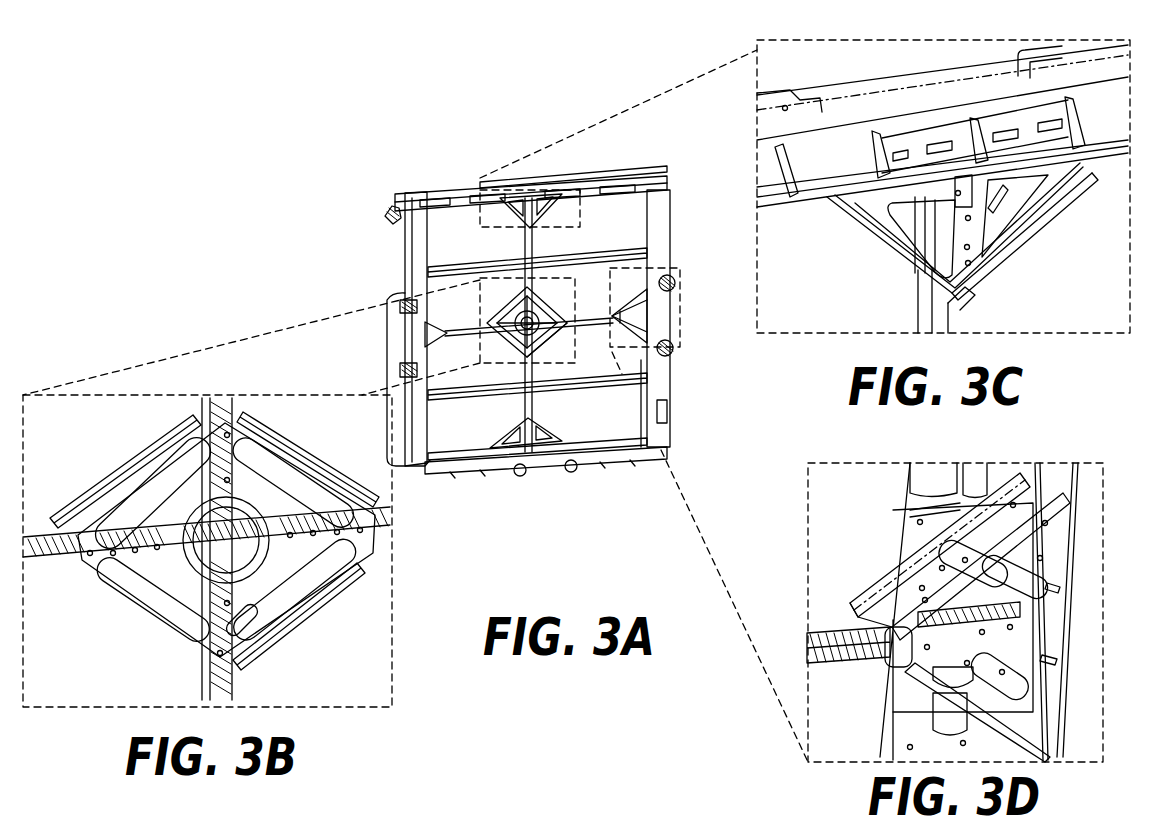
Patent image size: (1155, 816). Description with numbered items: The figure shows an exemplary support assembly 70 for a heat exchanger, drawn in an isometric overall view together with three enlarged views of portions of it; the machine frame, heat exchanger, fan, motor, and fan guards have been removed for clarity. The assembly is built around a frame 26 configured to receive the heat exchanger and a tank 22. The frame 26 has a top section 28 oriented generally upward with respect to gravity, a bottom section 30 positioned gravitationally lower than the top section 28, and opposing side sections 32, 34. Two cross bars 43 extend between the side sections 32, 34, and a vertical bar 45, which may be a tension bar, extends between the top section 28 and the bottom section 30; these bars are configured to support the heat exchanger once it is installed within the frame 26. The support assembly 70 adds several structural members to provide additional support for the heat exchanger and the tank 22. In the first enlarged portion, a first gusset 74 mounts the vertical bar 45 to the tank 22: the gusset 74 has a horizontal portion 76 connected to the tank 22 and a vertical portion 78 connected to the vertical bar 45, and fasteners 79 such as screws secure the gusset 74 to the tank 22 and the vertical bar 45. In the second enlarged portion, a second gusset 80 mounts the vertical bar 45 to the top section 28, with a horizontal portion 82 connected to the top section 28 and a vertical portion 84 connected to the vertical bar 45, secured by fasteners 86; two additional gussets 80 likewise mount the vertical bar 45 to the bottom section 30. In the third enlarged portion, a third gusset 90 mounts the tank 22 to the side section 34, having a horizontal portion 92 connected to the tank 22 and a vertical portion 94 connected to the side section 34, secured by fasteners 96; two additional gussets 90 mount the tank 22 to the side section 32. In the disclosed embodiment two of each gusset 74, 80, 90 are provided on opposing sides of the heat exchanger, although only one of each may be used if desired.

In FIG. 3A, the support assembly 70 is at (482, 95).
In FIG. 3A, the tank 22 is at (446, 333).
In FIG. 3B, the tank 22 is at (42, 558).
In FIG. 3D, the tank 22 is at (828, 657).
In FIG. 3A, the frame 26 is at (393, 212).
In FIG. 3A, the top section 28 is at (627, 178).
In FIG. 3C, the top section 28 is at (843, 147).
In FIG. 3A, the bottom section 30 is at (478, 474).
In FIG. 3A, the side section 32 is at (404, 254).
In FIG. 3A, the side section 34 is at (670, 237).
In FIG. 3D, the side section 34 is at (927, 475).
In FIG. 3A, the cross bar 43 is at (418, 197).
In FIG. 3A, the vertical bar 45 is at (524, 243).
In FIG. 3B, the vertical bar 45 is at (233, 688).
In FIG. 3C, the vertical bar 45 is at (918, 310).
In FIG. 3A, the first gusset 74 is at (560, 352).
In FIG. 3B, the first gusset 74 is at (98, 497).
In FIG. 3B, the horizontal portion 76 is at (349, 534).
In FIG. 3B, the vertical portion 78 is at (232, 610).
In FIG. 3B, the fasteners 79 is at (251, 449).
In FIG. 3A, the second gusset 80 is at (565, 203).
In FIG. 3C, the second gusset 80 is at (852, 223).
In FIG. 3C, the horizontal portion 82 is at (1062, 192).
In FIG. 3C, the vertical portion 84 is at (967, 272).
In FIG. 3C, the fasteners 86 is at (1028, 198).
In FIG. 3A, the third gusset 90 is at (397, 300).
In FIG. 3D, the third gusset 90 is at (903, 577).
In FIG. 3D, the horizontal portion 92 is at (887, 607).
In FIG. 3D, the vertical portion 94 is at (1043, 570).
In FIG. 3D, the fasteners 96 is at (922, 650).